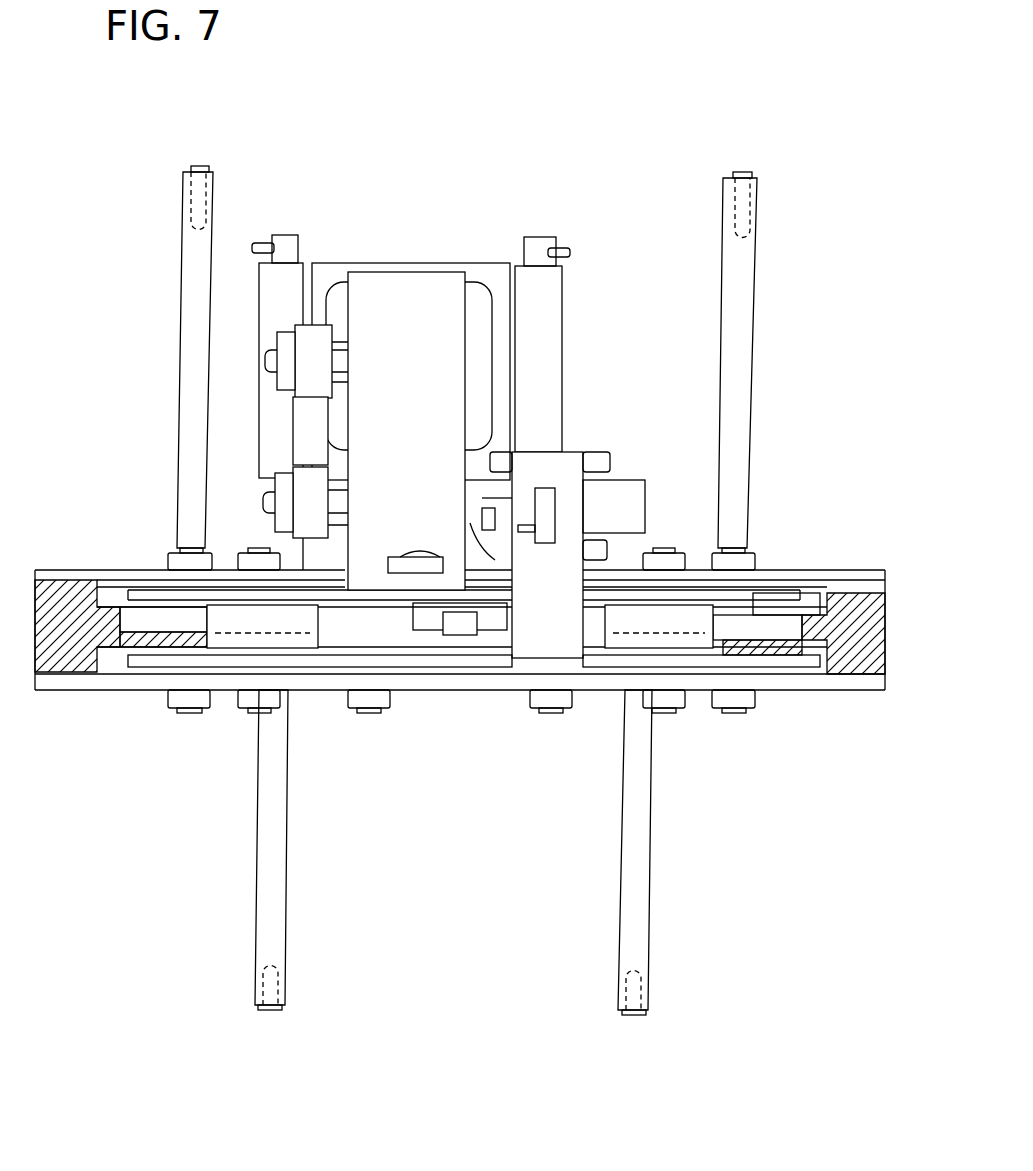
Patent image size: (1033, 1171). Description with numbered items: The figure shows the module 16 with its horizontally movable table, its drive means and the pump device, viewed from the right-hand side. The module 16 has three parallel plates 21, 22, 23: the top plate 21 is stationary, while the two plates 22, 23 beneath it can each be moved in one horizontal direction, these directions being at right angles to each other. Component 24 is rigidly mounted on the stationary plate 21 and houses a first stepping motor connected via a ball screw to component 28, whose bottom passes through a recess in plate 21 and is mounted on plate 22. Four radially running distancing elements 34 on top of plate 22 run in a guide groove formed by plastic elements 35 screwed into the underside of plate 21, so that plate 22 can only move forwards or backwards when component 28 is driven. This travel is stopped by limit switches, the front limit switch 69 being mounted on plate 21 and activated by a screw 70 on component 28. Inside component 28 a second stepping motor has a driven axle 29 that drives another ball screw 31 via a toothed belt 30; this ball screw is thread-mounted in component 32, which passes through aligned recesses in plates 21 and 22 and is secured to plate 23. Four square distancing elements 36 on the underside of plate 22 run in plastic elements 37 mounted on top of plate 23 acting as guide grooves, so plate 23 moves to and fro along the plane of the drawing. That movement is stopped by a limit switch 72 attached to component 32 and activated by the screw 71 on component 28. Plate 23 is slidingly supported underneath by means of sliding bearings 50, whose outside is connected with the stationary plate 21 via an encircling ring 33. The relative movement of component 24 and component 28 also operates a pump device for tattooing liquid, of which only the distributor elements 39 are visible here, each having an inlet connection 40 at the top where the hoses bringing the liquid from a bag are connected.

The module 16 is at (800, 287).
The top plate 21 is at (780, 580).
The plate 22 is at (780, 602).
The bottom plate 23 is at (777, 668).
The component 24 is at (325, 275).
The component 28 is at (425, 386).
The driven axle 29 is at (262, 360).
The toothed belt 30 is at (282, 420).
The ball screw 31 is at (480, 498).
The component 32 is at (567, 477).
The encircling ring 33 is at (307, 615).
The distancing element 34 is at (430, 613).
The plastic element 35 is at (45, 638).
The square distancing element 36 is at (463, 625).
The plastic element 37 is at (240, 645).
The element of the pump device 39 is at (278, 302).
The inlet connection 40 is at (266, 235).
The sliding bearing 50 is at (180, 668).
The front limit switch 69 is at (452, 540).
The screw 70 is at (410, 548).
The screw 71 is at (470, 523).
The limit switch 72 is at (548, 507).